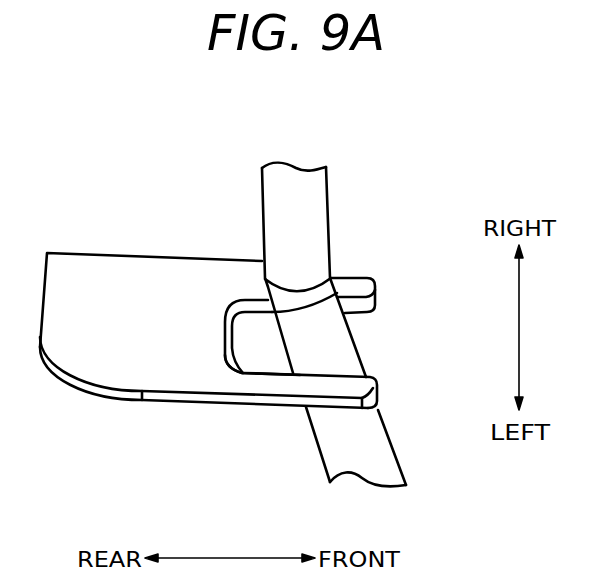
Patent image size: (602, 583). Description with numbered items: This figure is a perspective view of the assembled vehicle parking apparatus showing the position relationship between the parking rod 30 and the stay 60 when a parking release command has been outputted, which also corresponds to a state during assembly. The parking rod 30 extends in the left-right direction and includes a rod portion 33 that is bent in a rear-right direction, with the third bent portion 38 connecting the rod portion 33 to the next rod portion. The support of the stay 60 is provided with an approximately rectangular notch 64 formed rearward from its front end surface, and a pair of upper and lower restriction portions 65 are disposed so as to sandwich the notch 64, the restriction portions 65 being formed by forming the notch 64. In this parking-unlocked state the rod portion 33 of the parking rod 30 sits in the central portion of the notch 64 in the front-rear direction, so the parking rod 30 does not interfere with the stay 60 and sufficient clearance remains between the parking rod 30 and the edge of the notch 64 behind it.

The parking rod 30 is at (333, 190).
The rod portion 33 is at (335, 331).
The third bent portion 38 is at (275, 292).
The stay 60 is at (154, 408).
The notch 64 is at (243, 372).
The restriction portions 65 is at (350, 290).